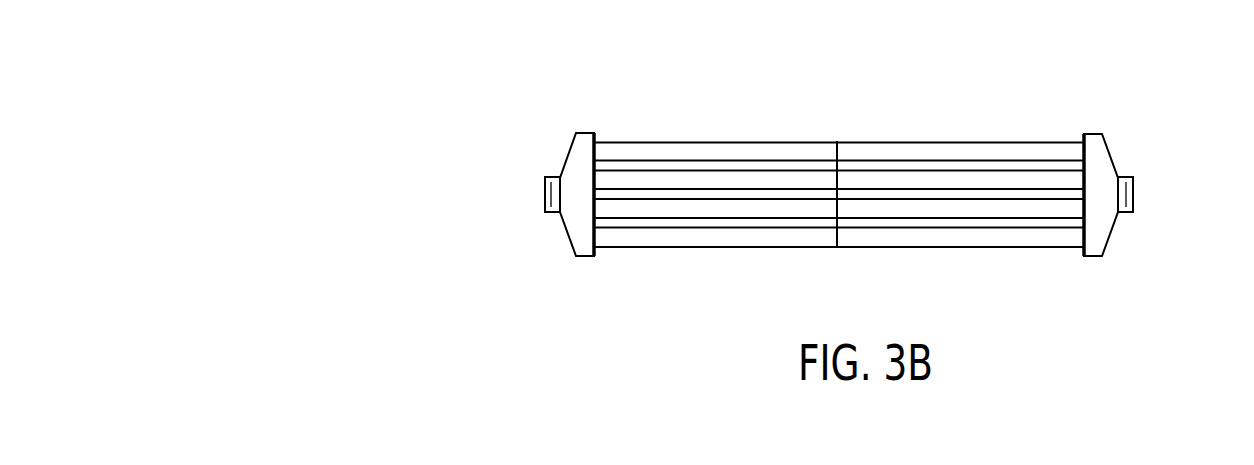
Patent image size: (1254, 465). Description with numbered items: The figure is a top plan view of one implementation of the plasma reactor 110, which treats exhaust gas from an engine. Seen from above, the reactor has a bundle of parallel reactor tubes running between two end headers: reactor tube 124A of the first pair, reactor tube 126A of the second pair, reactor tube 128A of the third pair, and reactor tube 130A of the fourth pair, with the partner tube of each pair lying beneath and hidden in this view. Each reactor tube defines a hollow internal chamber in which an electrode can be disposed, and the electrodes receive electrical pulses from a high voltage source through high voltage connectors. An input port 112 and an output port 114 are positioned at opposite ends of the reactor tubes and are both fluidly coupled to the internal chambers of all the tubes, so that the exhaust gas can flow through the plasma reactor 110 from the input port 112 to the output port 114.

The plasma reactor 110 is at (538, 84).
The input port 112 is at (545, 195).
The output port 114 is at (1133, 197).
The reactor tube 124A is at (1020, 237).
The reactor tube 126A is at (943, 210).
The reactor tube 128A is at (948, 182).
The reactor tube 130A is at (1022, 150).